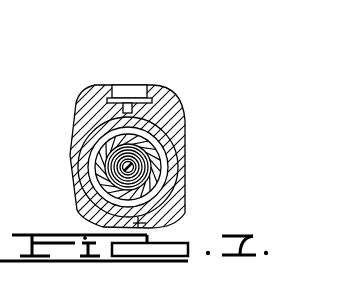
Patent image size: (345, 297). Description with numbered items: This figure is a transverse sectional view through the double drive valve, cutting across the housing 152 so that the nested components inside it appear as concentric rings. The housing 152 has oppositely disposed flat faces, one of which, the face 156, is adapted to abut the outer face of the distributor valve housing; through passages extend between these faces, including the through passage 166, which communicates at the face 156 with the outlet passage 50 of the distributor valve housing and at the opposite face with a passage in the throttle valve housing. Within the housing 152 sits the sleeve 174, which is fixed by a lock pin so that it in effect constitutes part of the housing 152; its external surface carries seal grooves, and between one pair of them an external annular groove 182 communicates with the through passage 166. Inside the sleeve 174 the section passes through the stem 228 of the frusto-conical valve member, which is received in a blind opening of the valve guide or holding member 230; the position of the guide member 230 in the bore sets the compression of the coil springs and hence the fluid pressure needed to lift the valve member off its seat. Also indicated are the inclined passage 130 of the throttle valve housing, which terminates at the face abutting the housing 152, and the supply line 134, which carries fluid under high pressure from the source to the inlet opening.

The outlet passageway 50 is at (121, 86).
The through passage 166 is at (131, 110).
The flat face 156 is at (160, 90).
The housing 152 is at (167, 113).
The valve guide or holding member 230 is at (80, 150).
The stem 228 is at (128, 168).
The supply line 134 is at (152, 165).
The external annular groove 182 is at (158, 179).
The sleeve 174 is at (163, 200).
The inclined passage 130 is at (328, 160).